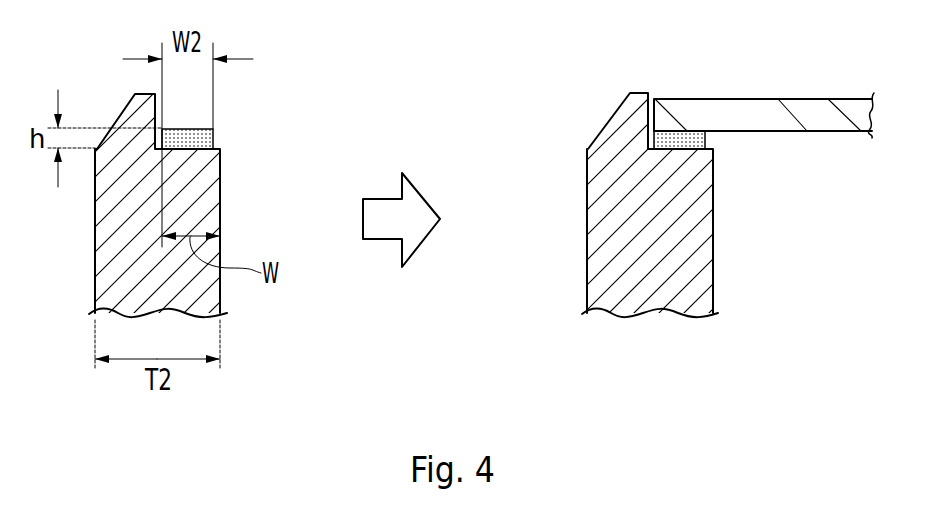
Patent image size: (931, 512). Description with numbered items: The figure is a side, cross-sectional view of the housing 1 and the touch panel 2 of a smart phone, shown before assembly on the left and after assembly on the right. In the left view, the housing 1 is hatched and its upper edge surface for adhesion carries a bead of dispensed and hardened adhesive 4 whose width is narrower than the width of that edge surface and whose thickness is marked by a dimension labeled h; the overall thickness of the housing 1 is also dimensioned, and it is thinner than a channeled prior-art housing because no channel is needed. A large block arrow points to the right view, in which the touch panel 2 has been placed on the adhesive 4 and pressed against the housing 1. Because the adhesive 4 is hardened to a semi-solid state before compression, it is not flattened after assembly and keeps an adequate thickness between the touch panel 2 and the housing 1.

The housing 1 is at (122, 227).
The touch panel 2 is at (776, 105).
The adhesive 4 is at (192, 129).